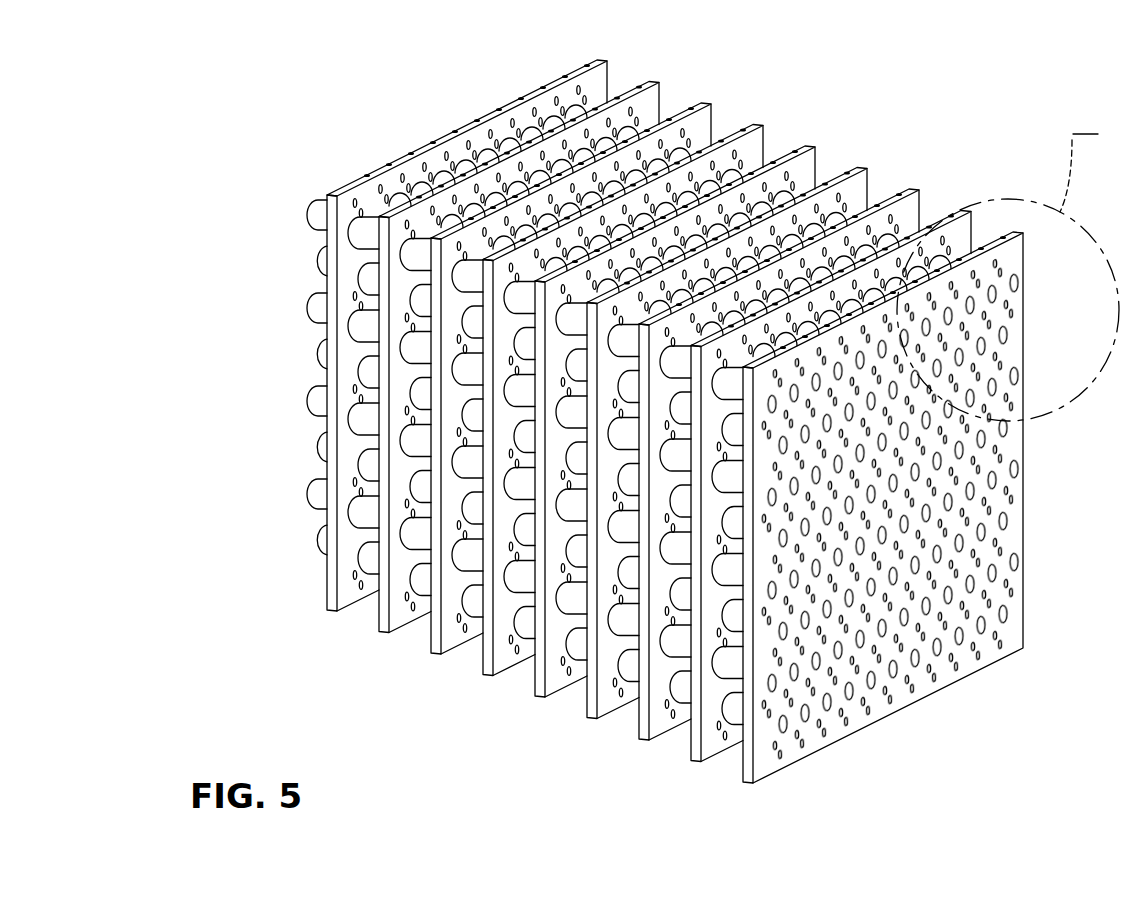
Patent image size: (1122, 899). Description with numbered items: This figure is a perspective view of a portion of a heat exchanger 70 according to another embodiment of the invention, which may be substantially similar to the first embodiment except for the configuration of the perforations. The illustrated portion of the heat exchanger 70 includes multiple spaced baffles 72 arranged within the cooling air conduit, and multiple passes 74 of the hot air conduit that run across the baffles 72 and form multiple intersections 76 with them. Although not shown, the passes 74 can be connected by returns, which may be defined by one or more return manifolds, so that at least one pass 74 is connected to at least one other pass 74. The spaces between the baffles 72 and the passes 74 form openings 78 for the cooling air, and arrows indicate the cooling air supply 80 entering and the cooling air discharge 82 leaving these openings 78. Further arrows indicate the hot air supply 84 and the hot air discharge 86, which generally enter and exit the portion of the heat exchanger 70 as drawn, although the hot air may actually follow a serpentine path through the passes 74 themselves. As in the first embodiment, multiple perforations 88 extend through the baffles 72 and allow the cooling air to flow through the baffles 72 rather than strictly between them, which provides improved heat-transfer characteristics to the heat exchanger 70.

The heat exchanger 70 is at (295, 56).
The baffles 72 is at (483, 673).
The passes 74 is at (627, 672).
The intersections 76 is at (400, 540).
The openings 78 is at (353, 269).
The cooling air supply 80 is at (838, 118).
The cooling air discharge 82 is at (553, 763).
The hot air supply 84 is at (1025, 729).
The hot air discharge 86 is at (200, 327).
The perforations 88 is at (1002, 262).